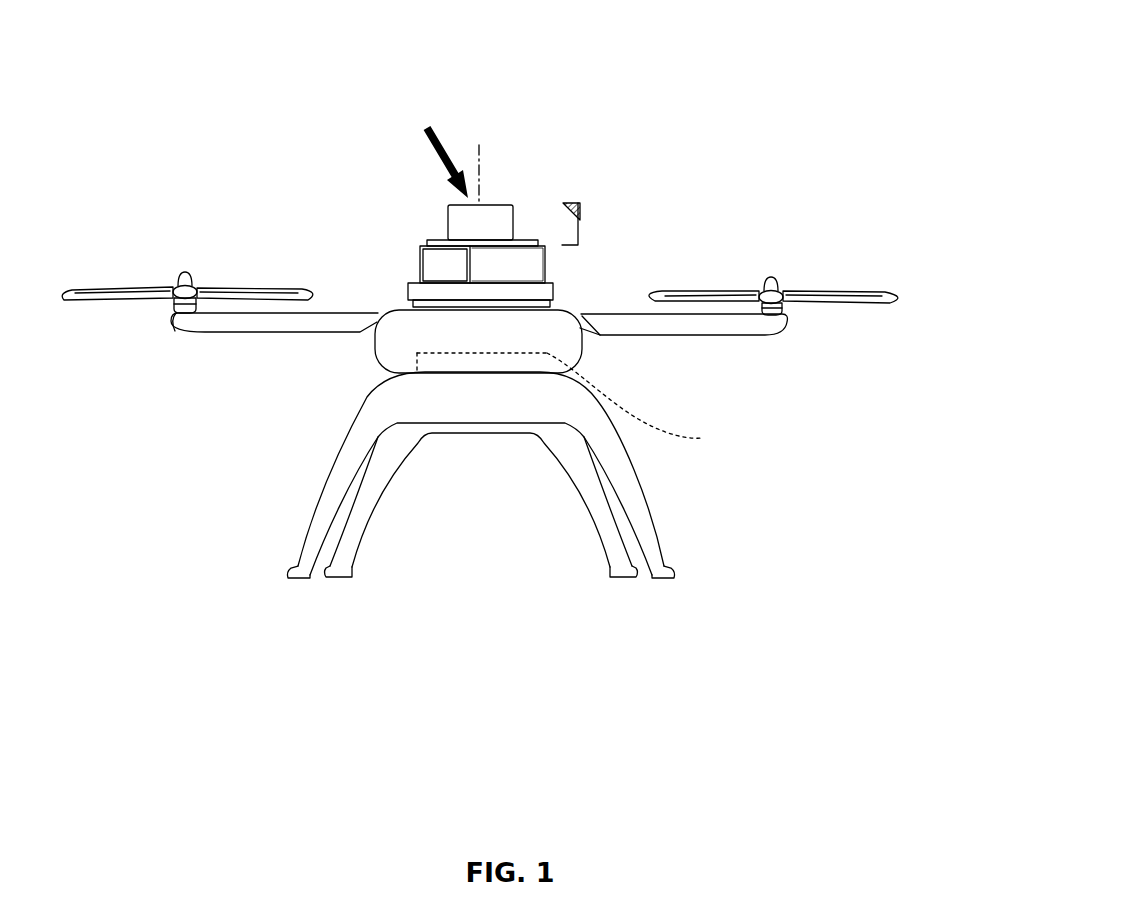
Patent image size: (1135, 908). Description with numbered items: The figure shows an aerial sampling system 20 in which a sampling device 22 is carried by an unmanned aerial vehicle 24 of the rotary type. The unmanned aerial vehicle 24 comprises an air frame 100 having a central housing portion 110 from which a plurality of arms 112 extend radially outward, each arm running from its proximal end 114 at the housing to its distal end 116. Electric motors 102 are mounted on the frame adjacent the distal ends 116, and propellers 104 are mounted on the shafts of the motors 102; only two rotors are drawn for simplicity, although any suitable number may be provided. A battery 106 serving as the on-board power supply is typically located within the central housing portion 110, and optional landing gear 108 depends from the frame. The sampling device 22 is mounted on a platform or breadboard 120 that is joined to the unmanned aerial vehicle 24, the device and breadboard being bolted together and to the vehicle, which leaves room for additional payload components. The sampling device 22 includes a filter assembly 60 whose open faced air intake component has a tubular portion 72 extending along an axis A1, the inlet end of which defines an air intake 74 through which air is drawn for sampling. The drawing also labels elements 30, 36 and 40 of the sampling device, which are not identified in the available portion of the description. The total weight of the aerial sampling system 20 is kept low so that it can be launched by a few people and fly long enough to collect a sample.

The aerial sampling system 20 is at (705, 86).
The sampling device 22 is at (664, 211).
The unmanned aerial vehicle 24 is at (738, 263).
The sensor assembly 30 is at (483, 226).
The controller housing 36 is at (525, 263).
The sensor housing 40 is at (442, 263).
The filter assembly 60 is at (578, 218).
The tubular portion 72 is at (463, 227).
The air intake 74 is at (500, 194).
The axis A1 is at (482, 183).
The air frame 100 is at (790, 427).
The electric motors 102 is at (786, 310).
The propellers 104 is at (885, 298).
The battery 106 is at (583, 404).
The landing gear 108 is at (637, 512).
The central housing portion 110 is at (400, 350).
The arms 112 is at (252, 322).
The proximal ends 114 is at (587, 328).
The distal ends 116 is at (173, 315).
The breadboard 120 is at (410, 282).